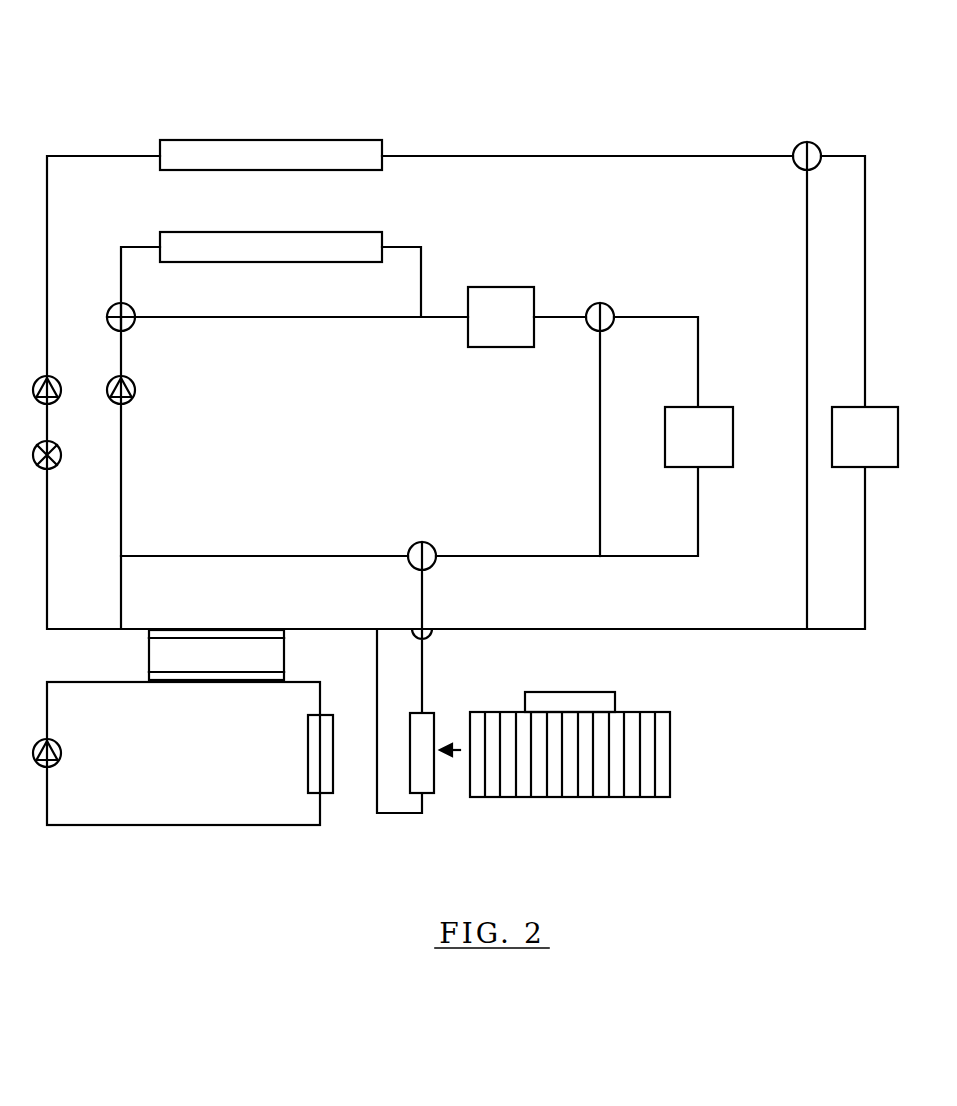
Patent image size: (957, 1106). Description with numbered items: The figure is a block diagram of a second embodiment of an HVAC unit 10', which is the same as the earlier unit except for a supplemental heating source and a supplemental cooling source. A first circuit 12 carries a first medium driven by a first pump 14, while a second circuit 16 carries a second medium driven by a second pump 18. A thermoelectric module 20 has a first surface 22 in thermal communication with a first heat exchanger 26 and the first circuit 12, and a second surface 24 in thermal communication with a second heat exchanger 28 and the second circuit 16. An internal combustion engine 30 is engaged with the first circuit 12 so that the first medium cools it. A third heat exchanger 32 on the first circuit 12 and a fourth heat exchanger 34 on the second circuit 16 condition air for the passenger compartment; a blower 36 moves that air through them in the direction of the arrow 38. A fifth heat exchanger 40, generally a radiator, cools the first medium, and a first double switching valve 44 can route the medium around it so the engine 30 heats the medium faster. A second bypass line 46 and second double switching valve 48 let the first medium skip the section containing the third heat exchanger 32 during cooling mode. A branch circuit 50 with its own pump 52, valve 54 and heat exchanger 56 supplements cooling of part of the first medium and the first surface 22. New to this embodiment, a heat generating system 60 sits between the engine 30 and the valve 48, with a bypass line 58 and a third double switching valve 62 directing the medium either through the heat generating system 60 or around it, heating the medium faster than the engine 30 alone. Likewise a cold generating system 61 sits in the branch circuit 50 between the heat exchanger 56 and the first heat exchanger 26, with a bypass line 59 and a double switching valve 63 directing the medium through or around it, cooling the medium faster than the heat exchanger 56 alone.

The HVAC unit 10' is at (736, 39).
The first circuit 12 is at (121, 452).
The first pump 14 is at (135, 391).
The second circuit 16 is at (47, 798).
The second pump 18 is at (57, 762).
The thermoelectric module 20 is at (149, 662).
The first surface 22 is at (252, 634).
The second surface 24 is at (252, 676).
The first heat exchanger 26 is at (180, 631).
The second heat exchanger 28 is at (200, 677).
The internal combustion engine 30 is at (494, 287).
The third heat exchanger 32 is at (434, 726).
The fourth heat exchanger 34 is at (308, 781).
The blower 36 is at (615, 701).
The arrow 38 is at (455, 756).
The fifth heat exchanger 40 is at (265, 232).
The first double switching valve 44 is at (134, 326).
The second bypass line 46 is at (290, 556).
The second double switching valve 48 is at (436, 548).
The branch circuit 50 is at (47, 308).
The pump 52 is at (61, 389).
The valve 54 is at (60, 459).
The heat exchanger 56 is at (265, 140).
The bypass line 58 is at (600, 430).
The bypass line 59 is at (807, 236).
The heat generating system 60 is at (733, 420).
The cold generating system 61 is at (870, 467).
The third double switching valve 62 is at (611, 307).
The double switching valve 63 is at (816, 146).